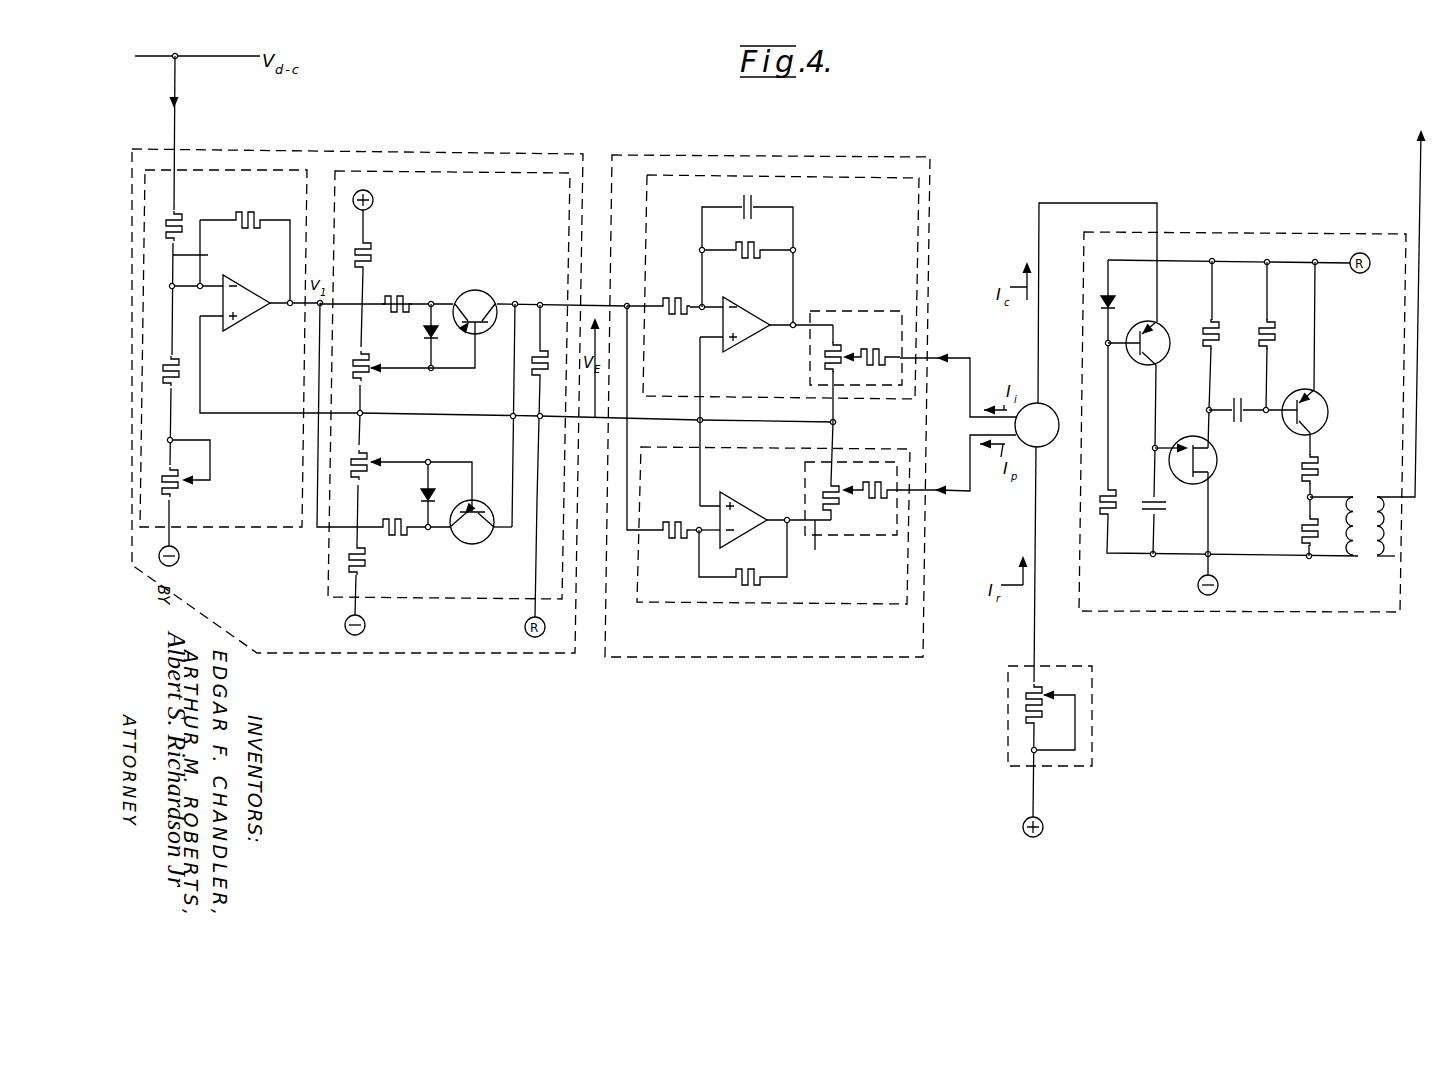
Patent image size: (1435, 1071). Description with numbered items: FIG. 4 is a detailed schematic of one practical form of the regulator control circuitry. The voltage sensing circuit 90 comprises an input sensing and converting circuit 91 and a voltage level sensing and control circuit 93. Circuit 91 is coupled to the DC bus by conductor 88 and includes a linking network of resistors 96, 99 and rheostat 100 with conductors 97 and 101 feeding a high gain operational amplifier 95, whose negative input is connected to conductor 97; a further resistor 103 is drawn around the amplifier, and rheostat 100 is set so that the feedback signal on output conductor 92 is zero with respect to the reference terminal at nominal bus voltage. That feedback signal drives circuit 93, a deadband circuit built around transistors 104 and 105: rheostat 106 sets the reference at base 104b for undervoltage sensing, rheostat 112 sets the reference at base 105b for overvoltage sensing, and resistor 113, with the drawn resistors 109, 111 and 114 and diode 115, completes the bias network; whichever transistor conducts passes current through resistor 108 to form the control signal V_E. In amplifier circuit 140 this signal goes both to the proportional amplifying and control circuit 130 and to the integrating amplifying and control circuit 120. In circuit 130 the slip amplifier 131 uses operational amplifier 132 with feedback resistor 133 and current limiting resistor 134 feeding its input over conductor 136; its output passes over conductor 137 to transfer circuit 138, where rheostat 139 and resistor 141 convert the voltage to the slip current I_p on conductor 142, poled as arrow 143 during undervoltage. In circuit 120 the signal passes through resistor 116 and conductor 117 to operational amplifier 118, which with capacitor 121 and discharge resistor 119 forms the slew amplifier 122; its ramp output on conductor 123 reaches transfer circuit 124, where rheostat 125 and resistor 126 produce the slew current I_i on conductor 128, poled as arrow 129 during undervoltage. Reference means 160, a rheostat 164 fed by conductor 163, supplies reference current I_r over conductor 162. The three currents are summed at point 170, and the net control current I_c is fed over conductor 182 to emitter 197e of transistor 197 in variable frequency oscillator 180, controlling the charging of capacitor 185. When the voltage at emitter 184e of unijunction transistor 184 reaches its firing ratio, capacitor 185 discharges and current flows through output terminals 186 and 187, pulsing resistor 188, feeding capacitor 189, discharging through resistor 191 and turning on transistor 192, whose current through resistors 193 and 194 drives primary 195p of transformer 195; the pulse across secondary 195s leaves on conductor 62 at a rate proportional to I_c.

The conductor 62 is at (1420, 192).
The conductor 88 is at (170, 127).
The voltage sensing circuit 90 is at (390, 655).
The input sensing and converting circuit 91 is at (245, 168).
The conductor 92 is at (287, 308).
The voltage level sensing and control circuit 93 is at (452, 170).
The operational amplifier 95 is at (250, 284).
The resistor 96 is at (178, 215).
The conductor 97 is at (202, 256).
The resistor 99 is at (177, 370).
The rheostat 100 is at (180, 488).
The conductor 101 is at (178, 552).
The feedback resistor 103 is at (255, 215).
The transistor 104 is at (485, 293).
The base 104b is at (475, 370).
The transistor 105 is at (485, 540).
The base 105b is at (475, 465).
The rheostat 106 is at (372, 372).
The resistor 108 is at (532, 352).
The resistor 109 is at (377, 258).
The resistor 111 is at (398, 295).
The rheostat 112 is at (371, 458).
The resistor 113 is at (365, 580).
The resistor 114 is at (388, 520).
The diode 115 is at (428, 537).
The linking and limiting resistor 116 is at (668, 298).
The conductor 117 is at (698, 312).
The operational amplifier 118 is at (745, 348).
The resistor 119 is at (760, 245).
The integrating amplifying and control circuit 120 is at (788, 176).
The capacitor 121 is at (742, 200).
The integrating or slew amplifier 122 is at (778, 295).
The conductor 123 is at (797, 328).
The transfer circuit 124 is at (868, 310).
The rheostat 125 is at (828, 367).
The resistor 126 is at (873, 350).
The conductor 128 is at (952, 366).
The arrow 129 is at (948, 352).
The proportional amplifying and control circuit 130 is at (722, 604).
The proportional or slip amplifier 131 is at (795, 508).
The operational amplifier 132 is at (745, 532).
The feedback resistor 133 is at (762, 583).
The current limiting resistor 134 is at (670, 540).
The conductor 136 is at (696, 527).
The conductor 137 is at (826, 546).
The transfer circuit 138 is at (858, 538).
The rheostat 139 is at (826, 480).
The amplifier circuit 140 is at (745, 659).
The resistor 141 is at (873, 498).
The conductor 142 is at (940, 489).
The arrow 143 is at (951, 502).
The reference means 160 is at (1094, 740).
The conductor 162 is at (1034, 627).
The conductor 163 is at (1033, 792).
The rheostat 164 is at (1023, 700).
The summation point 170 is at (1048, 407).
The variable frequency oscillator 180 is at (1233, 612).
The conductor 182 is at (1070, 203).
The unijunction transistor 184 is at (1192, 485).
The emitter 184e is at (1178, 445).
The capacitor 185 is at (1146, 500).
The output terminal 186 is at (1212, 444).
The output terminal 187 is at (1212, 474).
The resistor 188 is at (1219, 335).
The capacitor 189 is at (1238, 398).
The resistor 191 is at (1275, 335).
The transistor 192 is at (1325, 400).
The resistor 193 is at (1302, 462).
The resistor 194 is at (1302, 523).
The transformer 195 is at (1346, 527).
The primary 195p is at (1348, 558).
The secondary 195s is at (1376, 558).
The transistor 197 is at (1143, 367).
The emitter 197e is at (1151, 334).